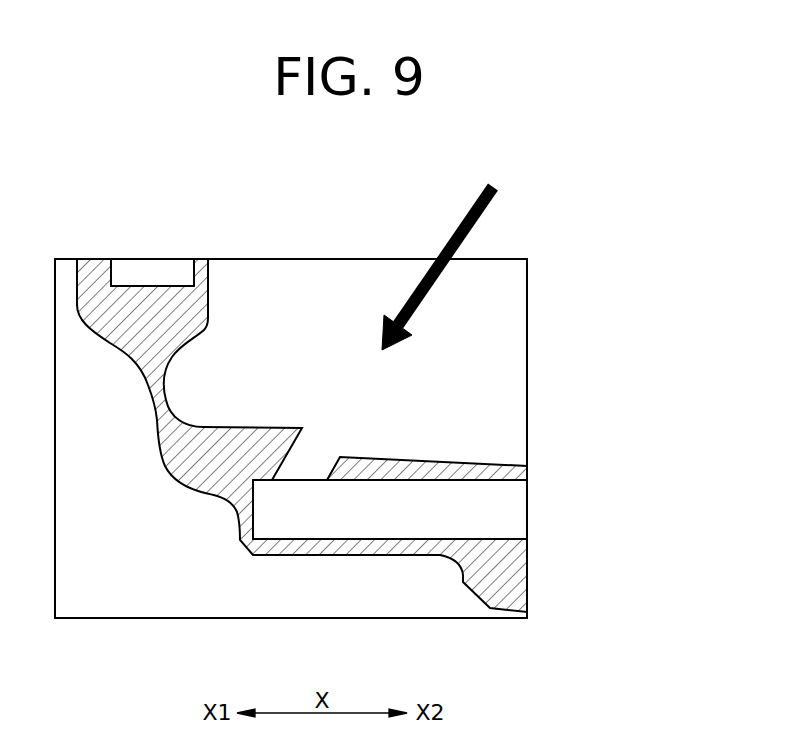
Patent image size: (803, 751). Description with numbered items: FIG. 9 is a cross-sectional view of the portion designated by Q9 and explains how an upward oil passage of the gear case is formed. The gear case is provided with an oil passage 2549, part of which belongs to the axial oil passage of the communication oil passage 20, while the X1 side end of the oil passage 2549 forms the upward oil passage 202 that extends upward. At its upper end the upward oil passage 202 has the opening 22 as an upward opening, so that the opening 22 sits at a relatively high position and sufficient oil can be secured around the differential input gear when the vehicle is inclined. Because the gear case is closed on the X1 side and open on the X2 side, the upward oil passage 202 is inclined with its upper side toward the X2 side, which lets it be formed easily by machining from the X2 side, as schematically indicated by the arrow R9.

The designated portion Q9 is at (242, 258).
The arrow R9 is at (463, 215).
The opening 22 is at (322, 428).
The communication oil passage 20 is at (470, 466).
The upward oil passage 202 is at (307, 465).
The oil passage 2549 is at (495, 512).